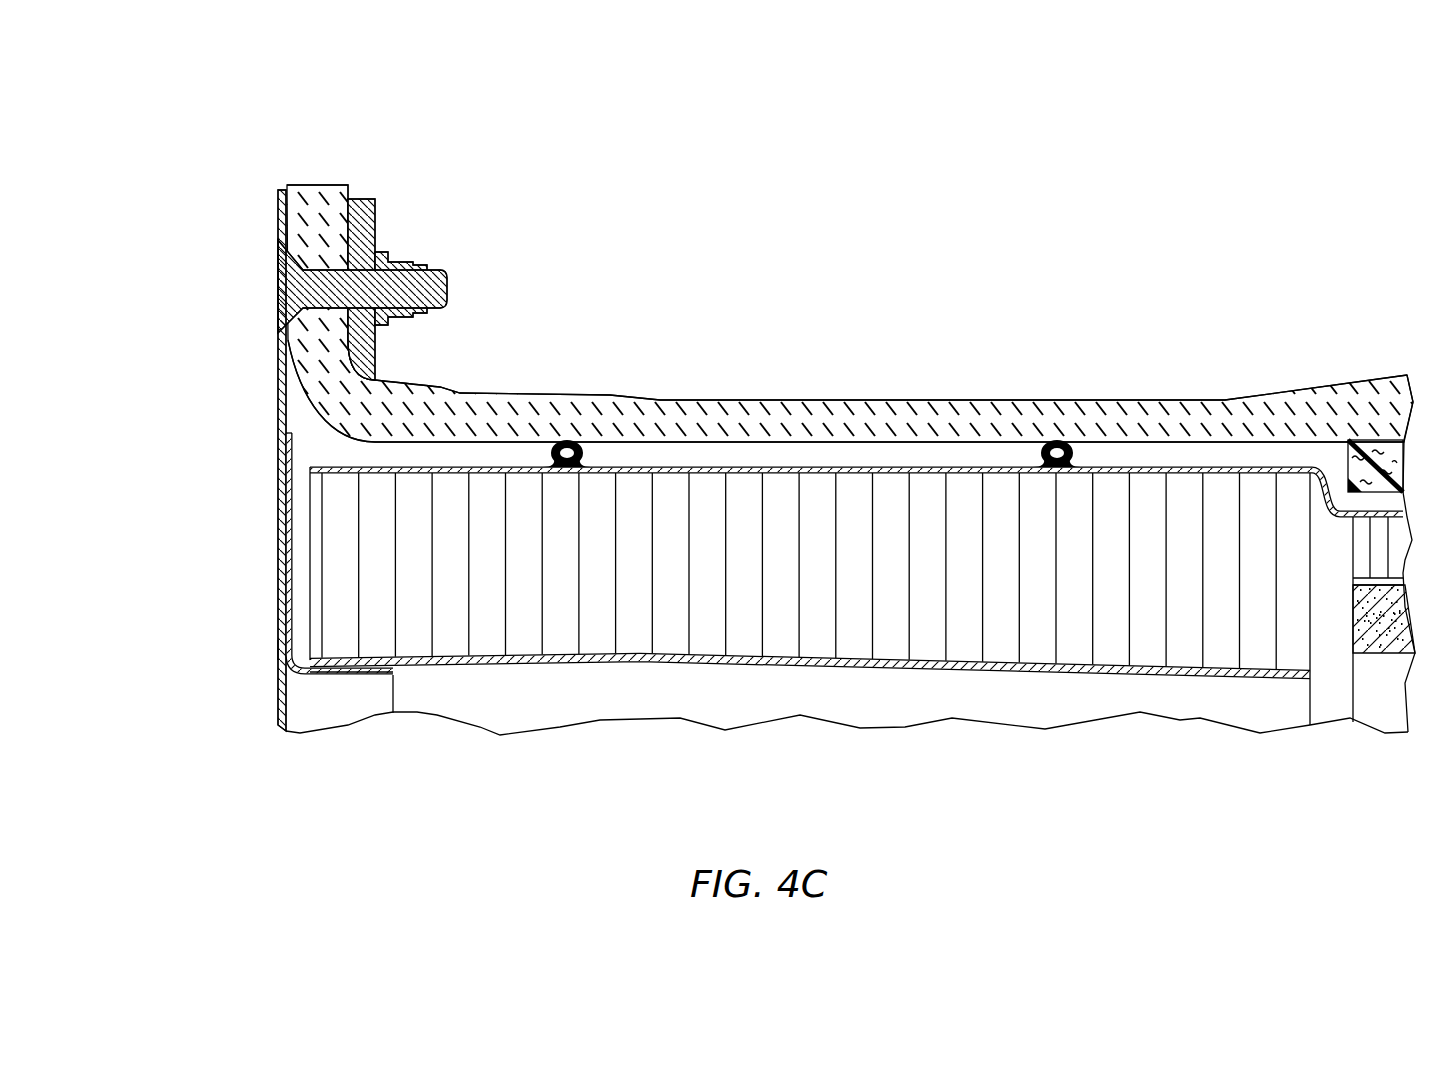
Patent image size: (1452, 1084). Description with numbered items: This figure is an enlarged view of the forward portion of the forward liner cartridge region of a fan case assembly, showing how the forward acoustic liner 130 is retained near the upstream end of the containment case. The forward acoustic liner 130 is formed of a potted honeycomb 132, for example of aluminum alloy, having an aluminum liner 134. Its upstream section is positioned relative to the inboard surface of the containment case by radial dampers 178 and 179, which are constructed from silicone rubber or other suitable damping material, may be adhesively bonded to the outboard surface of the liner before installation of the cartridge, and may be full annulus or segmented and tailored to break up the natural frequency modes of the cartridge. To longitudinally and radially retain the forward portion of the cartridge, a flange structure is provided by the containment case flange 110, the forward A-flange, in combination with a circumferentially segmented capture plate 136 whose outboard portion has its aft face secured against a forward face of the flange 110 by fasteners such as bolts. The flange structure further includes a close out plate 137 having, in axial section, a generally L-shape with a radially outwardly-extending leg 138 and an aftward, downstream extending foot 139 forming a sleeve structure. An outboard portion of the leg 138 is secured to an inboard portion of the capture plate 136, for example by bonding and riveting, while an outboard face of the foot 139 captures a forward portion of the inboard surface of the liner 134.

The flange 110 is at (326, 177).
The forward acoustic liner 130 is at (810, 638).
The potted honeycomb 132 is at (818, 615).
The aluminum liner 134 is at (642, 666).
The capture plate 136 is at (277, 385).
The close out plate 137 is at (266, 647).
The leg 138 is at (288, 577).
The foot 139 is at (322, 672).
The radial damper 178 is at (565, 440).
The radial damper 179 is at (1055, 440).